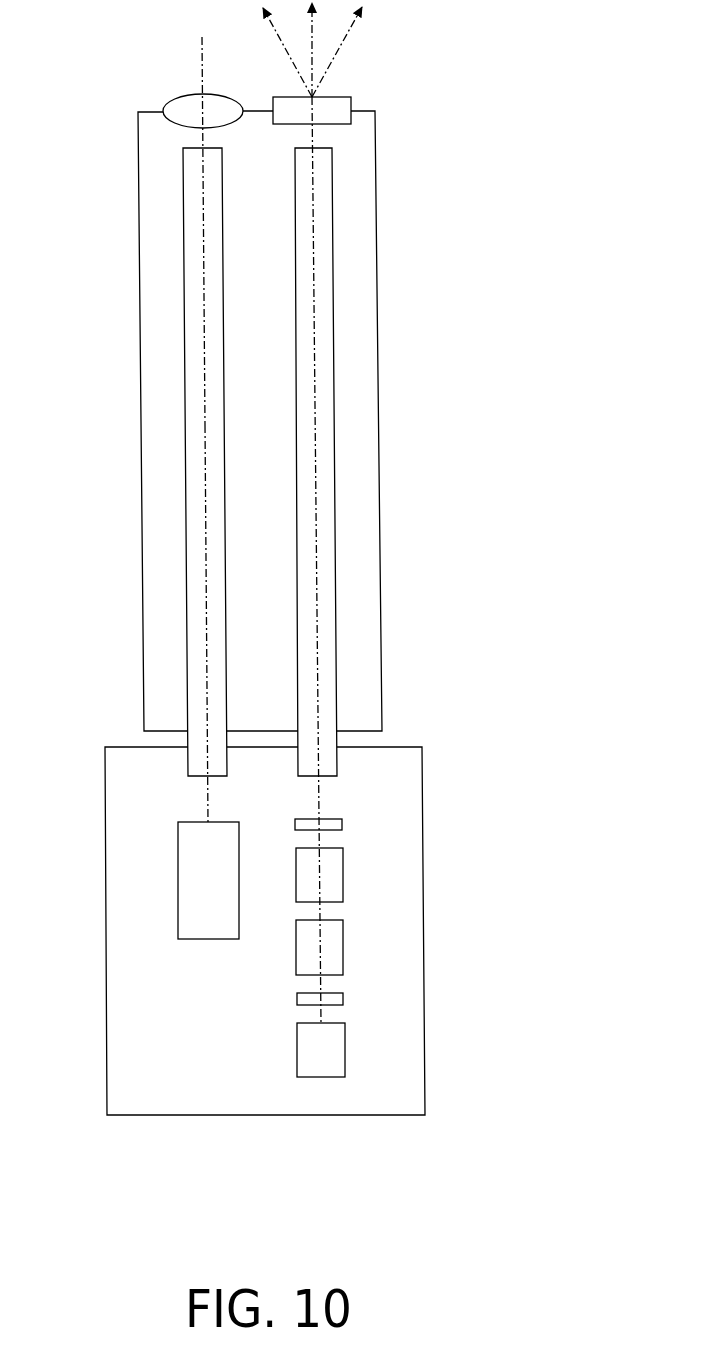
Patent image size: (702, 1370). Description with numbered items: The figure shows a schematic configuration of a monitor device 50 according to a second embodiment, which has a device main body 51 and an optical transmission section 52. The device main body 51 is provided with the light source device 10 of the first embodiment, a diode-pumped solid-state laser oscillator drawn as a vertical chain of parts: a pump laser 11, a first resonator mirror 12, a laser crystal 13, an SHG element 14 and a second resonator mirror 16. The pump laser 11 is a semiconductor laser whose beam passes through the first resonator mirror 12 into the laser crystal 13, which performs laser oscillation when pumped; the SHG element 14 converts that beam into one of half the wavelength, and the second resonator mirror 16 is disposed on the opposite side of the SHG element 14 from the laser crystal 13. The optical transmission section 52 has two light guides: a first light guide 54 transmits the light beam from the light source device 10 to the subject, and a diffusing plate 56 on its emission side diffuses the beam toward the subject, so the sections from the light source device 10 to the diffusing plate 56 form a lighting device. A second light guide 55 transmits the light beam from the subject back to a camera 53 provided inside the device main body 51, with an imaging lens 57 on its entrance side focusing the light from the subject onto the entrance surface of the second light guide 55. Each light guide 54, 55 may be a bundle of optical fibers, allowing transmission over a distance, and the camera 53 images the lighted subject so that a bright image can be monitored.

The light source device 10 is at (507, 792).
The pump laser 11 is at (345, 1047).
The first resonator mirror 12 is at (343, 998).
The laser crystal 13 is at (343, 945).
The SHG element 14 is at (343, 870).
The second resonator mirror 16 is at (342, 823).
The monitor device 50 is at (480, 183).
The device main body 51 is at (422, 762).
The optical transmission section 52 is at (378, 377).
The camera 53 is at (178, 882).
The first light guide 54 is at (333, 310).
The second light guide 55 is at (185, 308).
The diffusing plate 56 is at (333, 95).
The imaging lens 57 is at (182, 93).